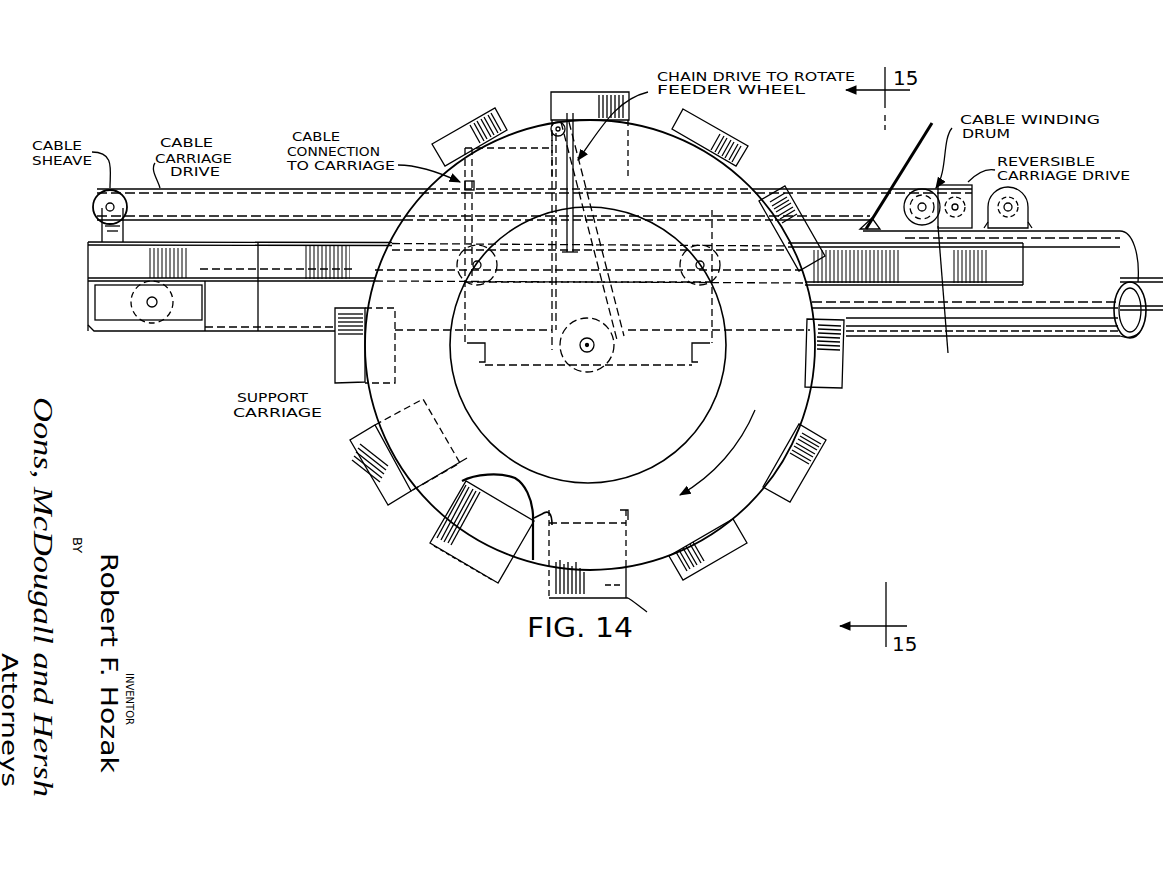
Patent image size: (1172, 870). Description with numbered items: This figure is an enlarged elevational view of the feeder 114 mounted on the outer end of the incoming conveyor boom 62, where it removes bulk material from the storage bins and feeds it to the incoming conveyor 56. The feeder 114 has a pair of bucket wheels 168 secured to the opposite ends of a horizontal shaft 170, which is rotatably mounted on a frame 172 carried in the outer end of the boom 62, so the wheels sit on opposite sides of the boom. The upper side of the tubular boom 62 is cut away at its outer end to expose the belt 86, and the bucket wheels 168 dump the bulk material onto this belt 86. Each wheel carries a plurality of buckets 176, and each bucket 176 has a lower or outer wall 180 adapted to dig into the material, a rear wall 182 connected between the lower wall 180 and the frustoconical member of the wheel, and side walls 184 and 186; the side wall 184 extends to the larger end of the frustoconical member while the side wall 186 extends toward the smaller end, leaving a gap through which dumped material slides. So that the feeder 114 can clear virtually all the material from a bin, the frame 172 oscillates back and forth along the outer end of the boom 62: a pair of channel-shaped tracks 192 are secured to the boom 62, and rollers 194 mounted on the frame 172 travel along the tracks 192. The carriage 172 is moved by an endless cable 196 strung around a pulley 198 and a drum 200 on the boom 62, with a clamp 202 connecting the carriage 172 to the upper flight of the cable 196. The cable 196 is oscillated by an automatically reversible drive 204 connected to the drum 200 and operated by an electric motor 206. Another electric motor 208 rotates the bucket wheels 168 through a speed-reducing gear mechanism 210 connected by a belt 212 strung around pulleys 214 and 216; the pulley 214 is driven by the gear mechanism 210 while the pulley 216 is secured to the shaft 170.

The incoming conveyor 56 is at (1011, 357).
The incoming conveyor boom 62 is at (1040, 336).
The conveyor belt 86 is at (1147, 280).
The feeder 114 is at (378, 557).
The bucket wheel 168 is at (752, 512).
The horizontal shaft 170 is at (582, 368).
The frame 172 is at (470, 352).
The bucket 176 is at (838, 395).
The lower wall 180 is at (577, 586).
The rear wall 182 is at (745, 534).
The side wall 184 is at (627, 585).
The side wall 186 is at (438, 533).
The channel-shaped track 192 is at (305, 289).
The roller 194 is at (462, 275).
The endless cable 196 is at (242, 188).
The pulley 198 is at (92, 207).
The drum 200 is at (917, 248).
The clamp 202 is at (465, 187).
The automatically reversible drive 204 is at (1053, 196).
The electric motor 206 is at (1030, 208).
The electric motor 208 is at (470, 138).
The speed-reducing gear mechanism 210 is at (556, 92).
The belt 212 is at (556, 305).
The pulley 214 is at (555, 122).
The pulley 216 is at (588, 372).